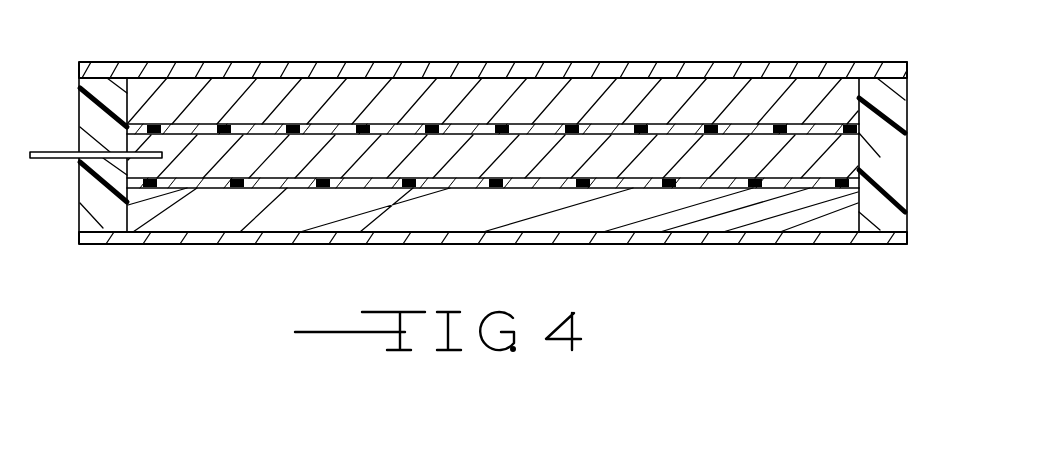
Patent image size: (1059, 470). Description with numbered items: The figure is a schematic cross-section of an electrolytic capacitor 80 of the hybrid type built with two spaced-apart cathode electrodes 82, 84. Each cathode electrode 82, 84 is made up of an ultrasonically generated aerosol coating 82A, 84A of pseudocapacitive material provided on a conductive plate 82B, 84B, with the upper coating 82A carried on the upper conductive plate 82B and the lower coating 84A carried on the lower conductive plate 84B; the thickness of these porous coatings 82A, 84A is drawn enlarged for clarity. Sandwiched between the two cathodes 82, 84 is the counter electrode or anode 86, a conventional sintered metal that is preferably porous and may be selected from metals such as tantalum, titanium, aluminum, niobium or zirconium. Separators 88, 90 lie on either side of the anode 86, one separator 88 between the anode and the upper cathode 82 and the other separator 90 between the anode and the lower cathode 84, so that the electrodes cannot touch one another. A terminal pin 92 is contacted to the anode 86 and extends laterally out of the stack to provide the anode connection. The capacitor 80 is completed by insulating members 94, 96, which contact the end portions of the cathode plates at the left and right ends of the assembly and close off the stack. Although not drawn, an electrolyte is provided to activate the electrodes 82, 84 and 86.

The electrolytic capacitor 80 is at (473, 177).
The cathode electrode 82 is at (493, 66).
The ultrasonically generated aerosol coating 82A is at (653, 98).
The conductive plate 82B is at (620, 27).
The cathode electrode 84 is at (493, 269).
The ultrasonically generated aerosol coating 84A is at (260, 212).
The conductive plate 84B is at (585, 243).
The anode 86 is at (242, 158).
The separator 88 is at (732, 128).
The separator 90 is at (780, 183).
The terminal pin 92 is at (53, 159).
The insulating member 94 is at (88, 112).
The insulating member 96 is at (890, 219).